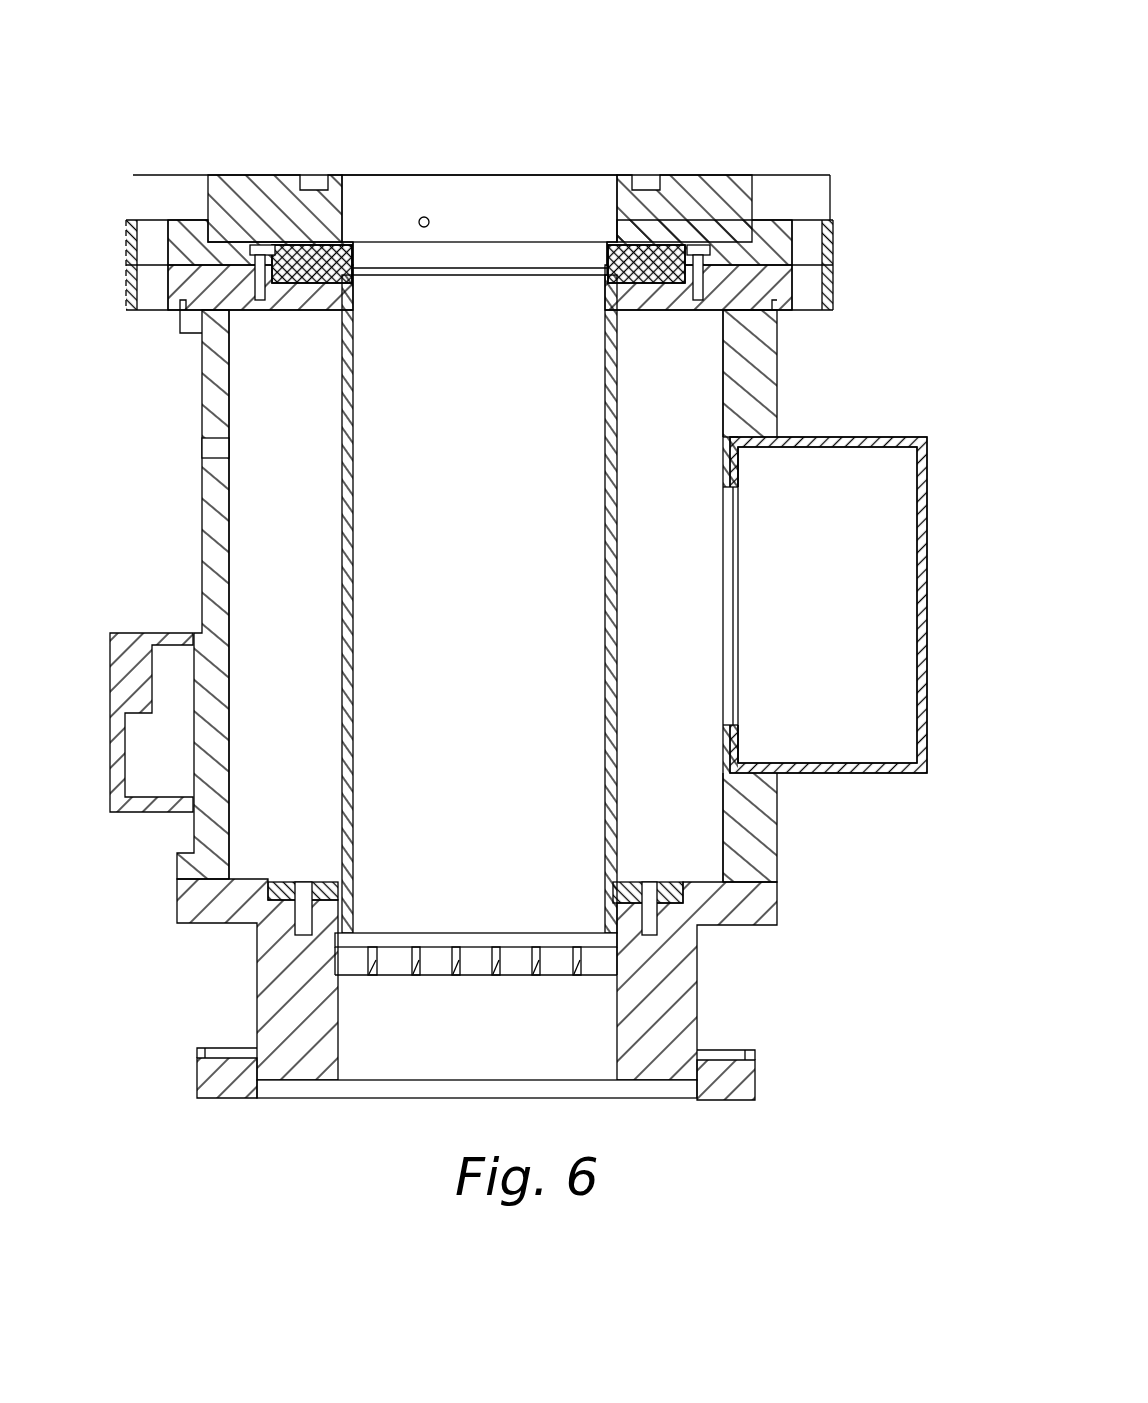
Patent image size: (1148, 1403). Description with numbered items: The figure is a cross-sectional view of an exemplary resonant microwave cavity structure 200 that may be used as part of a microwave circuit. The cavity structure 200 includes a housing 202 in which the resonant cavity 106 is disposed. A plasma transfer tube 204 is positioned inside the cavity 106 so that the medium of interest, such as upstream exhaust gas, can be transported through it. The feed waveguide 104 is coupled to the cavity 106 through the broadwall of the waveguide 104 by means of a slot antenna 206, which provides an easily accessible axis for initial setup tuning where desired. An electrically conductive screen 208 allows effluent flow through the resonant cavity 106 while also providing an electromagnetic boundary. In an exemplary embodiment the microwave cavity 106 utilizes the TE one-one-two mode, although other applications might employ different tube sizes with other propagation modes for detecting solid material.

The resonant microwave cavity structure 200 is at (511, 564).
The housing 202 is at (201, 402).
The plasma transfer tube 204 is at (340, 674).
The slot antenna 206 is at (720, 614).
The electrically conductive screen 208 is at (508, 242).
The feed waveguide 104 is at (843, 773).
The resonant cavity 106 is at (262, 532).